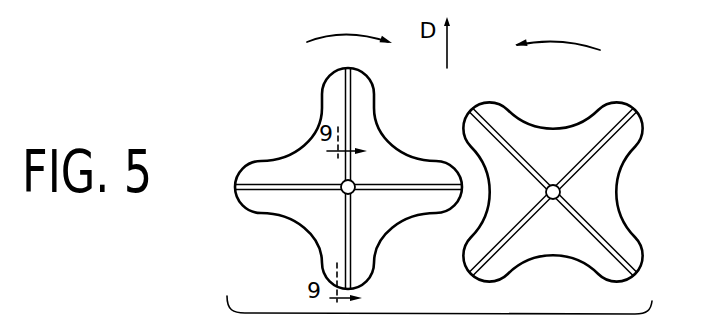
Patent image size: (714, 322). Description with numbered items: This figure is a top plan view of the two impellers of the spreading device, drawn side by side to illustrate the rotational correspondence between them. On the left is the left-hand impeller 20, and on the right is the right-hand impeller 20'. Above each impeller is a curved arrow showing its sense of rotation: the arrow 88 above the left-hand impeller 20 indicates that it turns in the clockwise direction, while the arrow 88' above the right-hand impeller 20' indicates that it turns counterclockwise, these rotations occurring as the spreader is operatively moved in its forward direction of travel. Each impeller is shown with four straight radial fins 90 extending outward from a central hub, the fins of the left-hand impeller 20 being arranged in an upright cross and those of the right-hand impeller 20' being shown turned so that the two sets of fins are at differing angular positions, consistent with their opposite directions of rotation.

The left-hand impeller 20 is at (348, 180).
The right-hand impeller 20' is at (551, 175).
The arrow 88 is at (349, 21).
The arrow 88' is at (557, 25).
The straight radial fins 90 is at (345, 100).